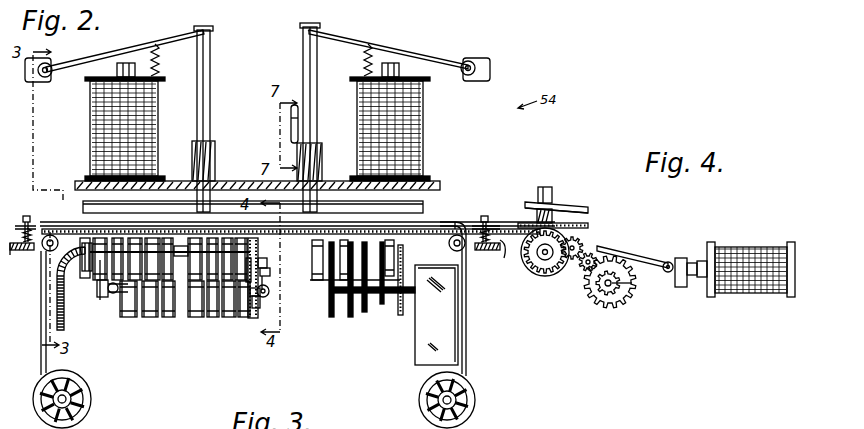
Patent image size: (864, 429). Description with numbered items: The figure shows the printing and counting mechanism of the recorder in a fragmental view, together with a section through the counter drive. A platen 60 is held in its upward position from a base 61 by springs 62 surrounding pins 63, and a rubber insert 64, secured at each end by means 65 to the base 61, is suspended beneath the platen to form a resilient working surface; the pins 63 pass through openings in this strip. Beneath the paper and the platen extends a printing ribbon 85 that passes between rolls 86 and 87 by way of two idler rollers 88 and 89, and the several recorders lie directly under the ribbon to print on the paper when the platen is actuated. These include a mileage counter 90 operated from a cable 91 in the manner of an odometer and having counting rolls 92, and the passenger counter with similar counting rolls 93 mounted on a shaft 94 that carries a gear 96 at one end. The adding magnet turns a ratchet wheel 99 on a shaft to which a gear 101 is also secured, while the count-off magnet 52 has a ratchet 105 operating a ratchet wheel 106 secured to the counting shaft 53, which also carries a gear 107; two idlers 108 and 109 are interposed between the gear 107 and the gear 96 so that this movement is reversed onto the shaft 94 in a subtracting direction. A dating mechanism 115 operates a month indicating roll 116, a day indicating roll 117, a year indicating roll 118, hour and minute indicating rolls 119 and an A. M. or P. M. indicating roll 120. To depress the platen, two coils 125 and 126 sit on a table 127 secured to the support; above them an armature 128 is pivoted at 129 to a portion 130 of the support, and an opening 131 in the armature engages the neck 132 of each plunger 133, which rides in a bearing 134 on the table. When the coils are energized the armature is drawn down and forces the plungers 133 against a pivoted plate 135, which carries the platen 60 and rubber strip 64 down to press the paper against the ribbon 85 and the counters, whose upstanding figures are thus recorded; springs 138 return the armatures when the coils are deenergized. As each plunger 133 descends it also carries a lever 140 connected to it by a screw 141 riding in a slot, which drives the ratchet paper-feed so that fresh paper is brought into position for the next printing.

In FIG. 4, the count-off magnet 52 is at (748, 246).
In FIG. 2, the counting shaft 53 is at (270, 292).
In FIG. 4, the counting shaft 53 is at (607, 292).
In FIG. 2, the platen 60 is at (448, 222).
In FIG. 4, the platen 60 is at (575, 210).
In FIG. 2, the base 61 is at (20, 250).
In FIG. 2, the springs 62 is at (25, 216).
In FIG. 2, the pins 63 is at (31, 222).
In FIG. 2, the rubber insert 64 is at (478, 217).
In FIG. 4, the rubber insert 64 is at (540, 200).
In FIG. 2, the securing means 65 is at (10, 256).
In FIG. 2, the printing ribbon 85 is at (41, 355).
In FIG. 4, the printing ribbon 85 is at (590, 226).
In FIG. 2, the ribbon roll 86 is at (92, 404).
In FIG. 2, the ribbon roll 87 is at (476, 404).
In FIG. 2, the idler roller 88 is at (62, 233).
In FIG. 2, the idler roller 89 is at (449, 244).
In FIG. 2, the mileage counter 90 is at (100, 280).
In FIG. 2, the cable 91 is at (64, 328).
In FIG. 2, the counting rolls 92 is at (168, 238).
In FIG. 2, the counting rolls 93 is at (228, 318).
In FIG. 4, the counting rolls 93 is at (550, 276).
In FIG. 2, the shaft 94 is at (180, 240).
In FIG. 4, the shaft 94 is at (543, 254).
In FIG. 2, the gear 96 is at (258, 246).
In FIG. 4, the gear 96 is at (544, 260).
In FIG. 2, the ratchet wheel 99 is at (100, 300).
In FIG. 2, the gear 101 is at (113, 298).
In FIG. 2, the ratchet 105 is at (270, 272).
In FIG. 4, the ratchet 105 is at (653, 265).
In FIG. 2, the ratchet wheel 106 is at (255, 297).
In FIG. 4, the ratchet wheel 106 is at (600, 300).
In FIG. 2, the gear 107 is at (256, 309).
In FIG. 4, the gear 107 is at (637, 294).
In FIG. 2, the idler 108 is at (272, 297).
In FIG. 4, the idler 108 is at (615, 251).
In FIG. 2, the idler 109 is at (267, 262).
In FIG. 4, the idler 109 is at (580, 243).
In FIG. 2, the dating mechanism 115 is at (411, 368).
In FIG. 2, the month indicating roll 116 is at (322, 290).
In FIG. 2, the day indicating roll 117 is at (331, 318).
In FIG. 2, the year indicating roll 118 is at (351, 318).
In FIG. 2, the hour and minute indicating rolls 119 is at (368, 312).
In FIG. 2, the A. M. or P. M. indicating roll 120 is at (390, 305).
In FIG. 2, the coil 125 is at (90, 138).
In FIG. 2, the coil 126 is at (425, 138).
In FIG. 2, the table 127 is at (440, 184).
In FIG. 2, the armature 128 is at (155, 44).
In FIG. 2, the pivot 129 is at (45, 78).
In FIG. 2, the portion of the support 130 is at (28, 85).
In FIG. 2, the opening 131 is at (190, 47).
In FIG. 2, the neck 132 is at (303, 50).
In FIG. 2, the plunger 133 is at (210, 91).
In FIG. 4, the plunger 133 is at (548, 188).
In FIG. 2, the bearing 134 is at (215, 160).
In FIG. 2, the pivoted plate 135 is at (371, 213).
In FIG. 4, the pivoted plate 135 is at (565, 204).
In FIG. 2, the springs 138 is at (205, 30).
In FIG. 2, the lever 140 is at (298, 130).
In FIG. 2, the screw 141 is at (298, 112).